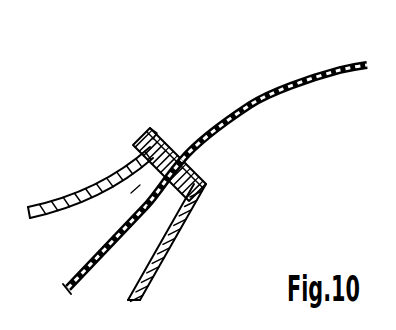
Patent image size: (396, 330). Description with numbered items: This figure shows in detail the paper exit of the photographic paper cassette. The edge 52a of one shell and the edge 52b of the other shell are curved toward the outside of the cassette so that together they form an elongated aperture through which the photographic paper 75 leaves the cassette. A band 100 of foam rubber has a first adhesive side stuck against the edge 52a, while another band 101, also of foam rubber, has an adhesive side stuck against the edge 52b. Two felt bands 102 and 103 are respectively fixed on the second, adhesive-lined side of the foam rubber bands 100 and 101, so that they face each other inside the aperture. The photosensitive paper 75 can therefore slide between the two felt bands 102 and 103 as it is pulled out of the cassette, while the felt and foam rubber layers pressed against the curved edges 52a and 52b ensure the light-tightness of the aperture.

The edge of the shell 52a is at (120, 163).
The edge of the shell 52b is at (177, 208).
The photographic paper 75 is at (304, 72).
The band of foam rubber 100 is at (158, 160).
The band of foam rubber 101 is at (182, 187).
The felt band 102 is at (131, 193).
The felt band 103 is at (147, 207).